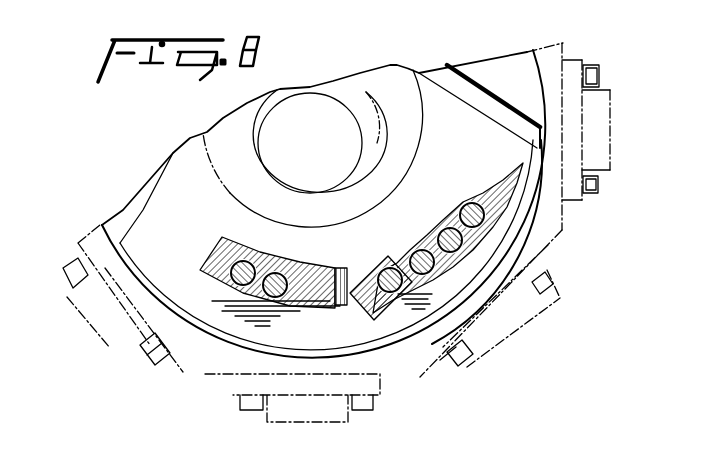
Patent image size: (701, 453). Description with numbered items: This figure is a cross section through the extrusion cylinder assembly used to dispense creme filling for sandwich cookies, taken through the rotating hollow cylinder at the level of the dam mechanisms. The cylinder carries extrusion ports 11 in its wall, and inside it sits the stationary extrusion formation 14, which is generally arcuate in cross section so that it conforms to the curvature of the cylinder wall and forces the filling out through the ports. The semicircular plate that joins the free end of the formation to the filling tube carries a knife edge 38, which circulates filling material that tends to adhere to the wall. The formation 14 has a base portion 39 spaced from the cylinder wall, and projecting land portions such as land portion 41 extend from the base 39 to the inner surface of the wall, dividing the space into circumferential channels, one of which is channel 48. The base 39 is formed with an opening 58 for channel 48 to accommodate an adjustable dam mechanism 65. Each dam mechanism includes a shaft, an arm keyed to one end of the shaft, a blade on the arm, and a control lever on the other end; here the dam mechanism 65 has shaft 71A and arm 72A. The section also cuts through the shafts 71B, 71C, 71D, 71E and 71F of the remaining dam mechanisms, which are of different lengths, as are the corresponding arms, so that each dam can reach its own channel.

The extrusion ports 11 is at (620, 121).
The extrusion formation 14 is at (410, 228).
The knife edge 38 is at (492, 100).
The base portion 39 is at (440, 207).
The land portion 41 is at (250, 285).
The channel 48 is at (258, 334).
The opening 58 is at (330, 276).
The adjustable dam mechanism 65 is at (385, 288).
The shaft 71A is at (422, 284).
The shaft 71B is at (432, 256).
The shaft 71C is at (455, 240).
The shaft 71D is at (525, 211).
The shaft 71E is at (236, 289).
The shaft 71F is at (222, 237).
The arm 72A is at (385, 308).